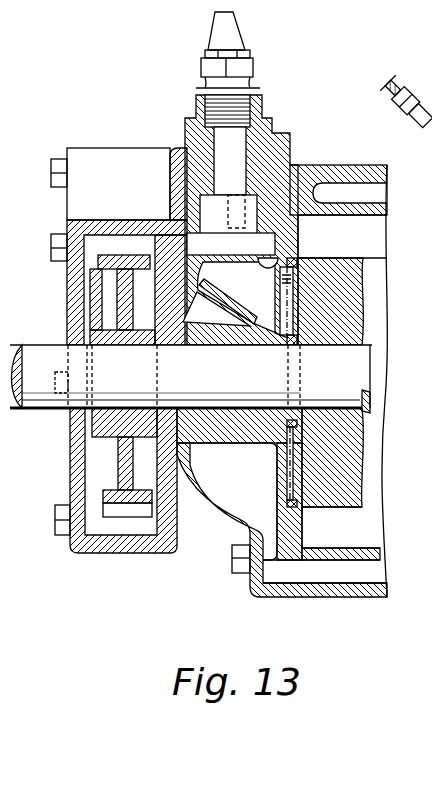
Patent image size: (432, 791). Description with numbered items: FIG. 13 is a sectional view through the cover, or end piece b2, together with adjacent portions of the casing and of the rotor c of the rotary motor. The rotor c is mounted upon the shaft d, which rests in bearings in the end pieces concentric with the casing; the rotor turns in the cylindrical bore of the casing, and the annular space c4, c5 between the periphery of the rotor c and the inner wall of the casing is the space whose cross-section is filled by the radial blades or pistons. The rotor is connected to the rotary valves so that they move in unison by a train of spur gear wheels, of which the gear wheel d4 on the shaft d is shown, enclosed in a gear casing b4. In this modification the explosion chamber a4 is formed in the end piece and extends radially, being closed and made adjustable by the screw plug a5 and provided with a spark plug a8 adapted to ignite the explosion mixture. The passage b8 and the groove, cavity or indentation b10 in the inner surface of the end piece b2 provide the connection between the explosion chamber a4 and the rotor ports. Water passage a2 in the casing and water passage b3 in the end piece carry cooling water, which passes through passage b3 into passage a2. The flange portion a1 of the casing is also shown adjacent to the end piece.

The cylinder upper flange a1 is at (366, 167).
The water passage a2 is at (325, 572).
The explosion chamber a4 is at (246, 236).
The screw plug a5 is at (268, 125).
The spark plug a8 is at (213, 37).
The end piece b2 is at (282, 520).
The water passage b3 is at (233, 501).
The gear casing b4 is at (116, 496).
The passage b8 is at (235, 300).
The groove b10 is at (297, 305).
The rotor c is at (350, 450).
The annular space c4 is at (341, 527).
The annular space c5 is at (342, 236).
The shaft d is at (191, 379).
The spur gear wheel d4 is at (138, 347).